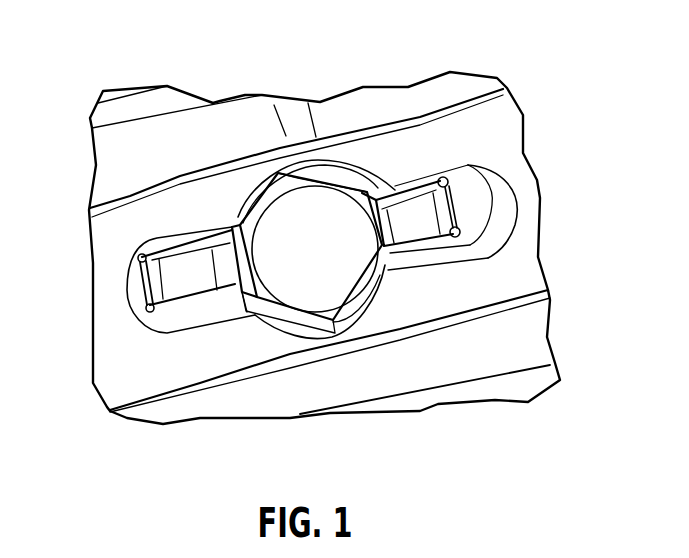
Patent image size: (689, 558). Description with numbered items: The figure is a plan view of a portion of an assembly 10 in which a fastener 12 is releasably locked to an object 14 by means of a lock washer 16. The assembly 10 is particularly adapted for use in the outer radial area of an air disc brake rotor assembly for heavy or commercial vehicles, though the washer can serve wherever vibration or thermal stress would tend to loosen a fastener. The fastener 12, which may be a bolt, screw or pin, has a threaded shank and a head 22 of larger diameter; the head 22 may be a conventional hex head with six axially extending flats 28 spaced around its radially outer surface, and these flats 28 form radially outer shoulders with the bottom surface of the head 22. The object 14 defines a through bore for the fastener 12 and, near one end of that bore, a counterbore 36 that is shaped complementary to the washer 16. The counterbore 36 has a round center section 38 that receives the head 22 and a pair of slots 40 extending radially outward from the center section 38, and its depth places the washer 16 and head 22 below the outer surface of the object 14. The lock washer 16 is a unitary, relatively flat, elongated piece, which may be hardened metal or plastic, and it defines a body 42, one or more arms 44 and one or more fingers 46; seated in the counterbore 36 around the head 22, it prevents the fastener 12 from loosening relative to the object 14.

The assembly 10 is at (105, 70).
The fastener 12 is at (299, 205).
The object 14 is at (118, 258).
The lock washer 16 is at (398, 190).
The head 22 is at (262, 297).
The flats 28 is at (253, 207).
The counterbore 36 is at (397, 288).
The round center section 38 is at (353, 327).
The slots 40 is at (503, 220).
The body 42 is at (283, 320).
The arms 44 is at (158, 320).
The fingers 46 is at (180, 280).